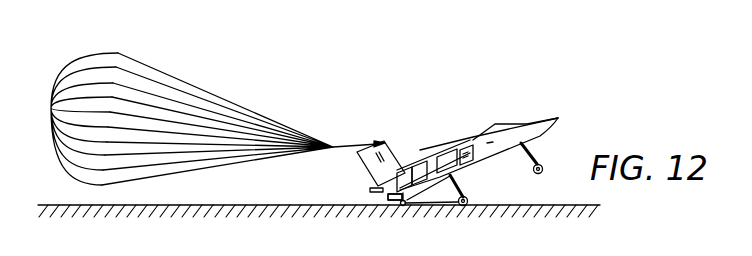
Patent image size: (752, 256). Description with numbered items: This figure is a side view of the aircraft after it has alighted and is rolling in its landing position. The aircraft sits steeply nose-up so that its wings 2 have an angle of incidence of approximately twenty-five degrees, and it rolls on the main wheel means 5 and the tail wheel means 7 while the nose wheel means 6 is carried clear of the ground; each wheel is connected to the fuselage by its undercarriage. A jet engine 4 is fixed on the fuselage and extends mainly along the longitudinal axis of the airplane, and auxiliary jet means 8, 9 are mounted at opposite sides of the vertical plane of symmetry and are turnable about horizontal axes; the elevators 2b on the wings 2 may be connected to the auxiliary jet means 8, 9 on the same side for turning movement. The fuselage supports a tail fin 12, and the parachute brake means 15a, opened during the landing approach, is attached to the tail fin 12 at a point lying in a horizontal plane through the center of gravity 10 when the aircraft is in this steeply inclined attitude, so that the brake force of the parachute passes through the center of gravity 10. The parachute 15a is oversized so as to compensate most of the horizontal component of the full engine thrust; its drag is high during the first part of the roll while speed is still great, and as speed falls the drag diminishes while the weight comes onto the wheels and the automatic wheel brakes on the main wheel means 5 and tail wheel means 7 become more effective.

The parachute brake means 15a is at (222, 95).
The tail fin 12 is at (368, 173).
The wings 2 is at (448, 145).
The elevators 2b is at (404, 150).
The jet engine 4 is at (432, 150).
The center of gravity 10 is at (457, 148).
The auxiliary jet means 8 is at (388, 196).
The auxiliary jet means 9 is at (395, 197).
The tail wheel means 7 is at (402, 207).
The main wheel means 5 is at (469, 201).
The nose wheel means 6 is at (544, 169).